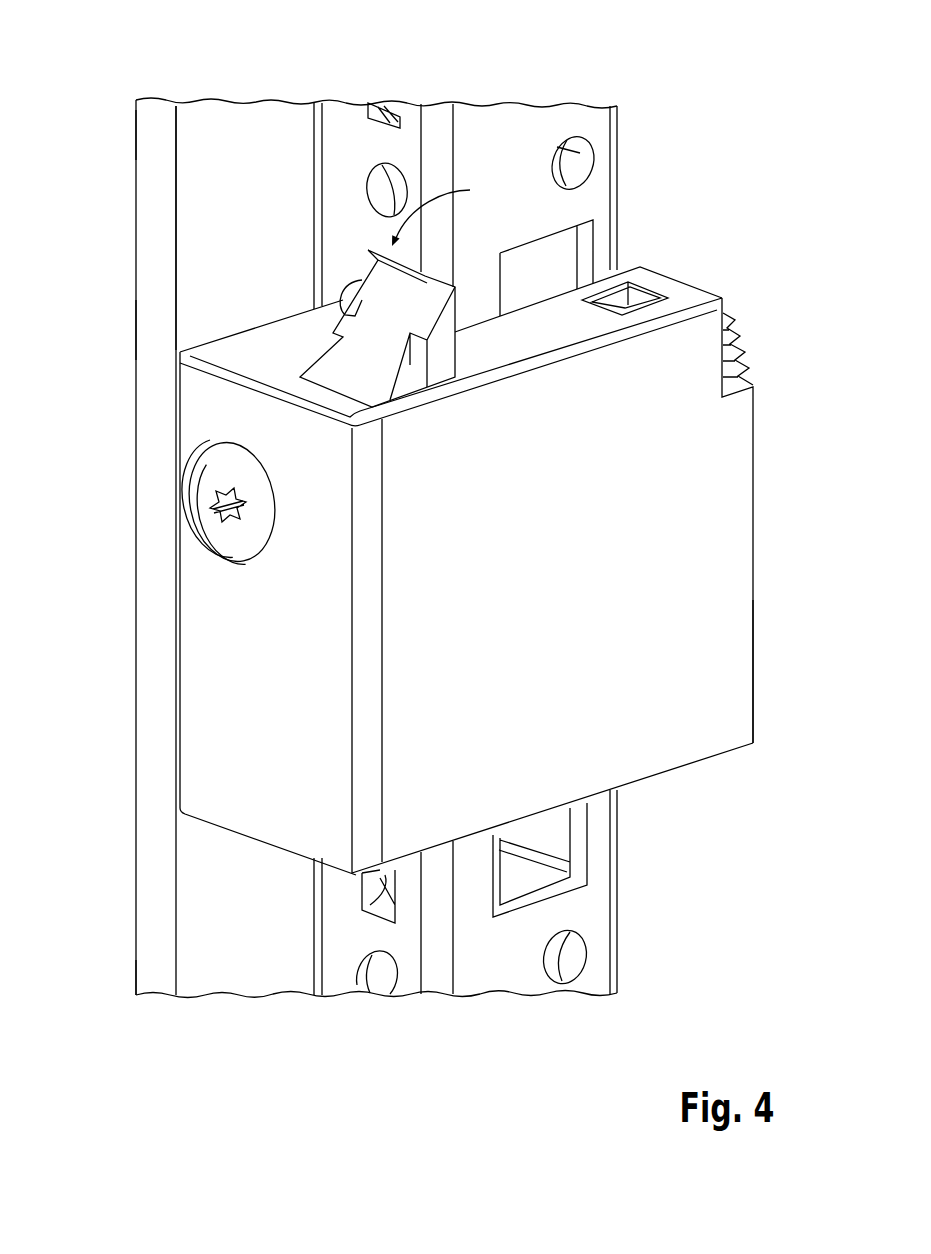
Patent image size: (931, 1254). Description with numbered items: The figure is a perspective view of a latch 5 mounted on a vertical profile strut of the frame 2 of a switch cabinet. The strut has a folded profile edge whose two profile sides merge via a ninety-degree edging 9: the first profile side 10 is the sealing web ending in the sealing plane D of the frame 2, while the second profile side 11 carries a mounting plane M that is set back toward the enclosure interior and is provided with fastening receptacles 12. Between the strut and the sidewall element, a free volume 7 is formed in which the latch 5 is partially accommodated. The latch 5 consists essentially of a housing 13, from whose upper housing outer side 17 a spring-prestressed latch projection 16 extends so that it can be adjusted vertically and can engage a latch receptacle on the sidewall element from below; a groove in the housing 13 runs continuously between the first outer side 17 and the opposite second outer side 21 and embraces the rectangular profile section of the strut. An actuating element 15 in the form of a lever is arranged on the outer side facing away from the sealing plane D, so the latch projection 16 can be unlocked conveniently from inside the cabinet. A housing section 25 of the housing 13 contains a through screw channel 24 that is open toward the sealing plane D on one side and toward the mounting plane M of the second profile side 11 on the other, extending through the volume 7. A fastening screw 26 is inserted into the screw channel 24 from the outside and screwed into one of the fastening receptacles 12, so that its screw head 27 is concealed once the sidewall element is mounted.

The frame 2 is at (485, 1008).
The latch 5 is at (738, 788).
The free volume 7 is at (243, 286).
The edging 9 is at (317, 120).
The first profile side 10 is at (218, 118).
The second profile side 11 is at (356, 118).
The fastening receptacles 12 is at (367, 191).
The housing 13 is at (728, 505).
The actuating element 15 is at (735, 338).
The latch projection 16 is at (420, 297).
The upper housing outer side 17 is at (680, 300).
The second outer side 21 is at (650, 790).
The screw channel 24 is at (205, 553).
The housing section 25 is at (185, 362).
The fastening screw 26 is at (192, 533).
The screw head 27 is at (203, 470).
The sealing plane D is at (126, 144).
The mounting plane M is at (444, 208).